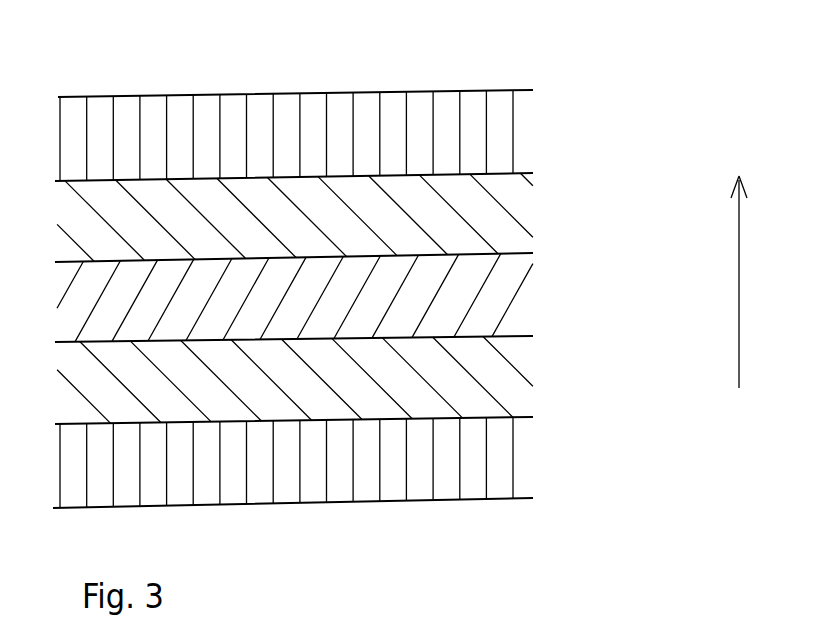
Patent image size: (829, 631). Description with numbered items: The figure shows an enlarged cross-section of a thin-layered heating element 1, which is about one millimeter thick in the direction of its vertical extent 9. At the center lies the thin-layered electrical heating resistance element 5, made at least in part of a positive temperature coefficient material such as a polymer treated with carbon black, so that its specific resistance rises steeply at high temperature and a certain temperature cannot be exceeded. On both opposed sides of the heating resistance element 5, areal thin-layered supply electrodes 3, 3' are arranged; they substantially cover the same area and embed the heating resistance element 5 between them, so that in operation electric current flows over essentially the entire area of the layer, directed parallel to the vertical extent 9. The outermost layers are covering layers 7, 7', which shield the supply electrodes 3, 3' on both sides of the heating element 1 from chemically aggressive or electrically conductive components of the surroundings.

The heating element 1 is at (539, 64).
The covering layer 7 is at (362, 135).
The supply electrode 3 is at (368, 217).
The heating resistance element 5 is at (508, 304).
The supply electrode 3' is at (363, 380).
The covering layer 7' is at (372, 462).
The vertical extent 9 is at (742, 281).